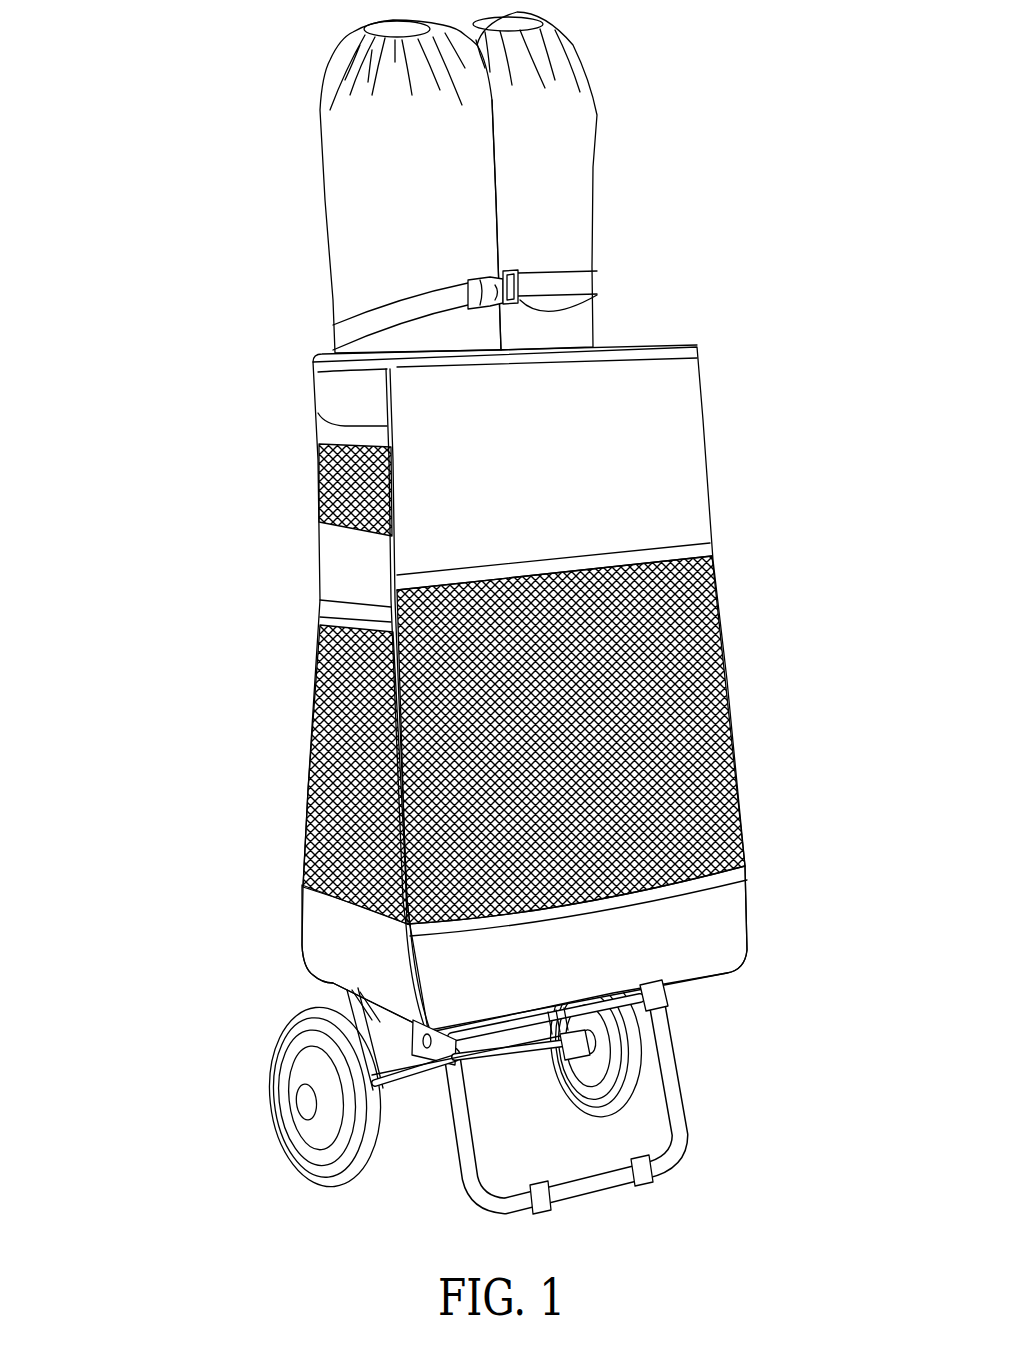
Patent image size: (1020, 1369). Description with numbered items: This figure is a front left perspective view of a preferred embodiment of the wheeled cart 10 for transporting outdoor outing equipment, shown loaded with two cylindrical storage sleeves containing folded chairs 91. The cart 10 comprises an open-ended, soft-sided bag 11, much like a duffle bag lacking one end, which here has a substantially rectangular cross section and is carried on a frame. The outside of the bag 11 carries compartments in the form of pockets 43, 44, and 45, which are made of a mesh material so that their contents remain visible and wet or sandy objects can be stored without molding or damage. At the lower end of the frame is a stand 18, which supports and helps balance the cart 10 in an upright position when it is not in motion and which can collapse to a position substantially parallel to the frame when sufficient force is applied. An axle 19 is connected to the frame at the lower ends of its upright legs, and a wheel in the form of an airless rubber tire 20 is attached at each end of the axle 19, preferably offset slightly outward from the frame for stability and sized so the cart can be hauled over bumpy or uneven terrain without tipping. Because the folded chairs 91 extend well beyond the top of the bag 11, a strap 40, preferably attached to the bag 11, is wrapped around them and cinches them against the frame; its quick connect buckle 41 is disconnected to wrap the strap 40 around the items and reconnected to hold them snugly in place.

The wheeled cart 10 is at (468, 779).
The bag 11 is at (528, 688).
The stand 18 is at (690, 1127).
The axle 19 is at (485, 1062).
The airless rubber tire 20 is at (284, 1030).
The strap 40 is at (597, 278).
The quick connect buckle 41 is at (597, 308).
The pocket 43 is at (319, 497).
The pocket 44 is at (308, 770).
The pocket 45 is at (725, 668).
The folded chairs 91 is at (597, 155).